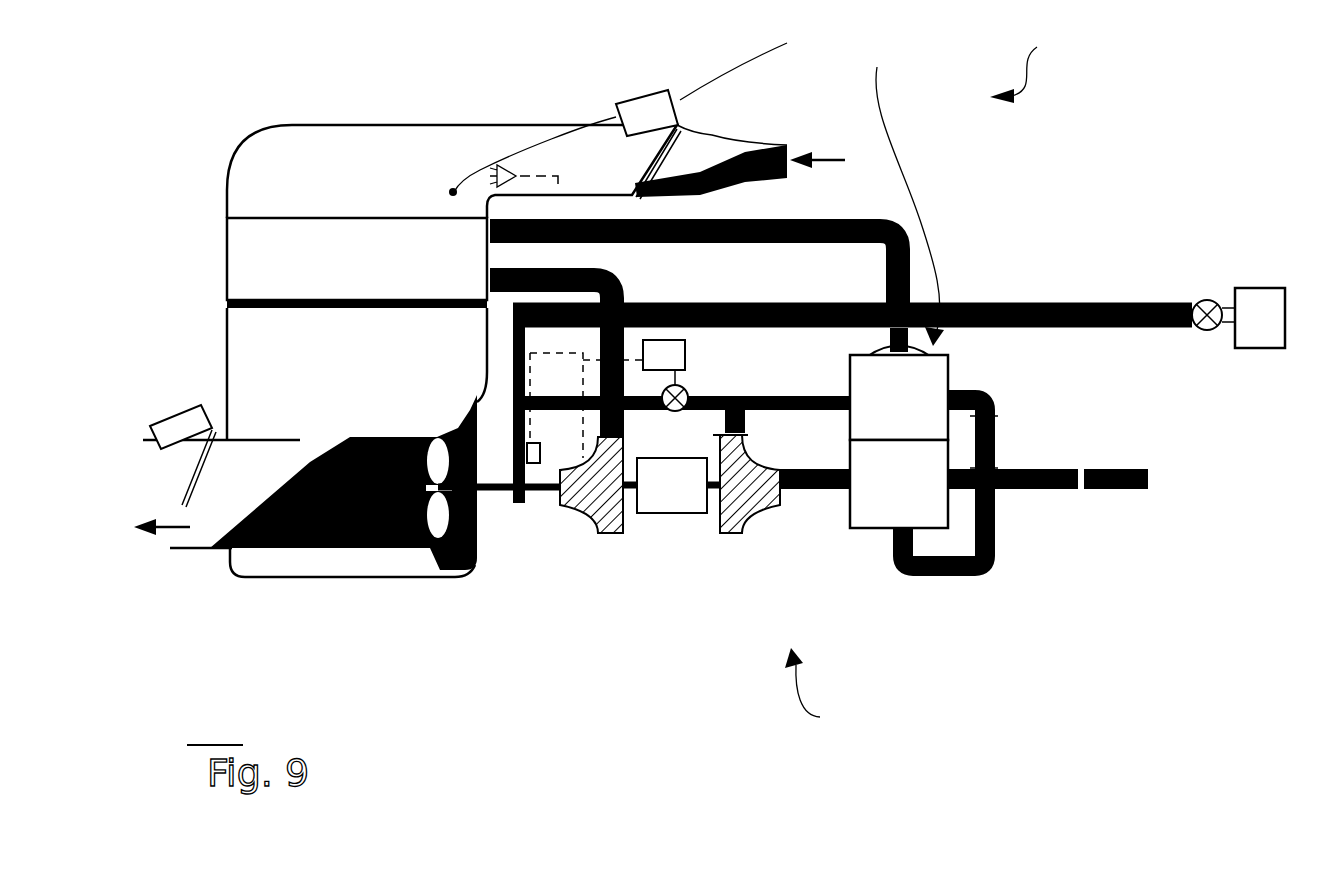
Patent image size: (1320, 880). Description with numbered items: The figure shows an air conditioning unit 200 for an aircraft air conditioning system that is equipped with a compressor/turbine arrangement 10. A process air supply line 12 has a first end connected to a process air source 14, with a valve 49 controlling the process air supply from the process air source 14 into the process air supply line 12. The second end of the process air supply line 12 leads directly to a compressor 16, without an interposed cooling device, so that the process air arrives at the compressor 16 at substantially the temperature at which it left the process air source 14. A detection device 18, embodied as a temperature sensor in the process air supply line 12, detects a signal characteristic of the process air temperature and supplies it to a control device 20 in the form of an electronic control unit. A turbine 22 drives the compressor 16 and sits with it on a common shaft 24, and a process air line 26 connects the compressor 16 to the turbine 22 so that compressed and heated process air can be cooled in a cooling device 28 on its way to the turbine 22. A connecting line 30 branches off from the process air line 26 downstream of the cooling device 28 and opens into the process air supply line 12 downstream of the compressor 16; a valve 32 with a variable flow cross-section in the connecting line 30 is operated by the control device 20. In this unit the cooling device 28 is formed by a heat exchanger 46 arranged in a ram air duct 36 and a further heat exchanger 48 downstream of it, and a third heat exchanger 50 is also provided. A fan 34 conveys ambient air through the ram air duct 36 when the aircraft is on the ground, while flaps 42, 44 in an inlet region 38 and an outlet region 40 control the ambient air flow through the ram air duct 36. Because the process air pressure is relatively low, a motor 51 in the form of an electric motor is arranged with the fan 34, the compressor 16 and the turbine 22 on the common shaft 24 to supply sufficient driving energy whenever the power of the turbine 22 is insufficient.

The compressor/turbine arrangement 10 is at (835, 691).
The process air supply line 12 is at (720, 303).
The process air source 14 is at (1262, 300).
The compressor 16 is at (600, 535).
The detection device 18 is at (533, 470).
The control device 20 is at (686, 355).
The turbine 22 is at (742, 533).
The common shaft 24 is at (498, 492).
The process air line 26 is at (798, 220).
The cooling device 28 is at (812, 183).
The connecting line 30 is at (700, 392).
The valve 32 is at (674, 412).
The fan 34 is at (432, 550).
The ram air duct 36 is at (324, 147).
The inlet region 38 is at (660, 100).
The outlet region 40 is at (178, 550).
The flap 42 is at (702, 142).
The flap 44 is at (198, 456).
The heat exchanger 46 is at (234, 258).
The further heat exchanger 48 is at (930, 382).
The valve 49 is at (1198, 296).
The third heat exchanger 50 is at (870, 520).
The motor 51 is at (668, 504).
The air conditioning unit 200 is at (1048, 72).